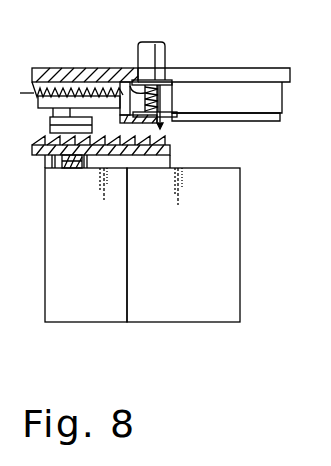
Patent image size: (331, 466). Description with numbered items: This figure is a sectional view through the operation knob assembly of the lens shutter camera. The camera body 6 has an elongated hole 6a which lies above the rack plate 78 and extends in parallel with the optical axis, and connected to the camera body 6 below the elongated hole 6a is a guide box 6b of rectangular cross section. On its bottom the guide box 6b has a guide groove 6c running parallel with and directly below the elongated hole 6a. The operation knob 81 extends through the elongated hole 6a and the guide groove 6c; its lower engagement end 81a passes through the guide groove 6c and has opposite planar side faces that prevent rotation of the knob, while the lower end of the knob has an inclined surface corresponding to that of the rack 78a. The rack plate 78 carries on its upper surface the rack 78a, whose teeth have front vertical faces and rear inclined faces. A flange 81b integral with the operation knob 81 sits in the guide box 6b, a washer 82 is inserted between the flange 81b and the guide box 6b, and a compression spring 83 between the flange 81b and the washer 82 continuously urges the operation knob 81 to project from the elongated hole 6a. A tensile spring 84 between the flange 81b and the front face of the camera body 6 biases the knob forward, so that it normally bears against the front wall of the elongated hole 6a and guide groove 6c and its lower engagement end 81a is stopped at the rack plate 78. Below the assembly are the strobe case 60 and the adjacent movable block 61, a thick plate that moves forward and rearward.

The camera body 6 is at (80, 68).
The elongated hole 6a is at (248, 70).
The guide box 6b is at (275, 79).
The guide groove 6c is at (268, 118).
The tensile spring 84 is at (27, 92).
The compression spring 83 is at (126, 90).
The operation knob 81 is at (150, 42).
The lower engagement end 81a is at (166, 126).
The flange 81b is at (150, 80).
The washer 82 is at (172, 112).
The rack plate 78 is at (157, 152).
The rack 78a is at (168, 142).
The strobe case 60 is at (92, 323).
The movable block 61 is at (183, 323).